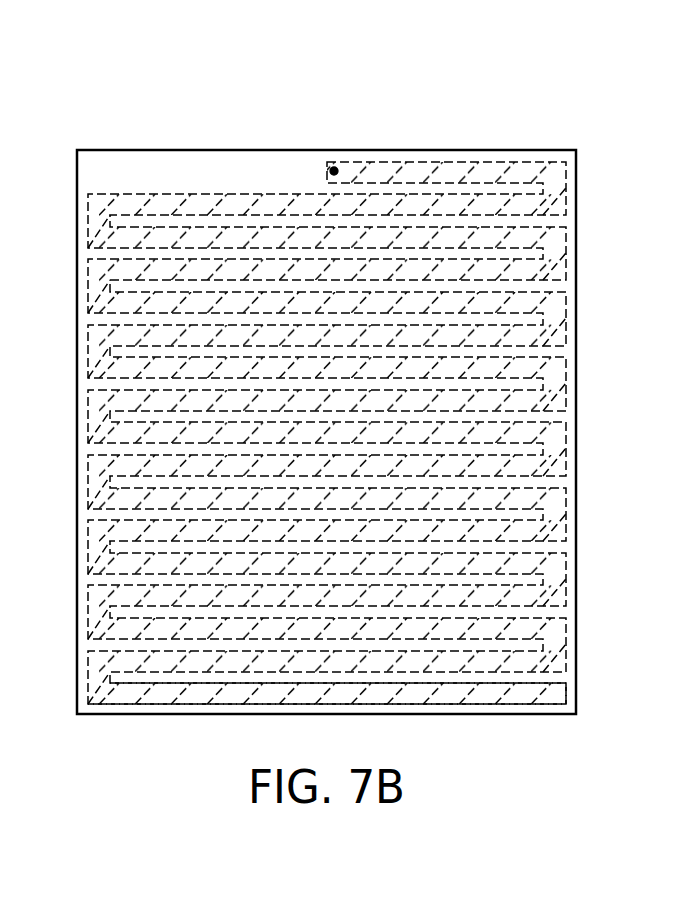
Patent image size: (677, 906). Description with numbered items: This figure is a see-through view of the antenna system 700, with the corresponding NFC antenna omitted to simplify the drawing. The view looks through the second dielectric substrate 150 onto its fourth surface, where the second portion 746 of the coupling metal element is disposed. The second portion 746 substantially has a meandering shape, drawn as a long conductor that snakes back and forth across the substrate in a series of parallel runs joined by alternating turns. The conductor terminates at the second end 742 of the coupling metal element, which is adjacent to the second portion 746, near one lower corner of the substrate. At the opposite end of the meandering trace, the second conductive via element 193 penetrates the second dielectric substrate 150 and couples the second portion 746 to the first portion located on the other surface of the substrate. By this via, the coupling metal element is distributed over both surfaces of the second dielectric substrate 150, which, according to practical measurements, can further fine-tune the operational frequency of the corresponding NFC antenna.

The antenna system 700 is at (113, 48).
The second dielectric substrate 150 is at (185, 166).
The second conductive via element 193 is at (334, 167).
The second portion 746 is at (567, 381).
The second end 742 is at (567, 693).